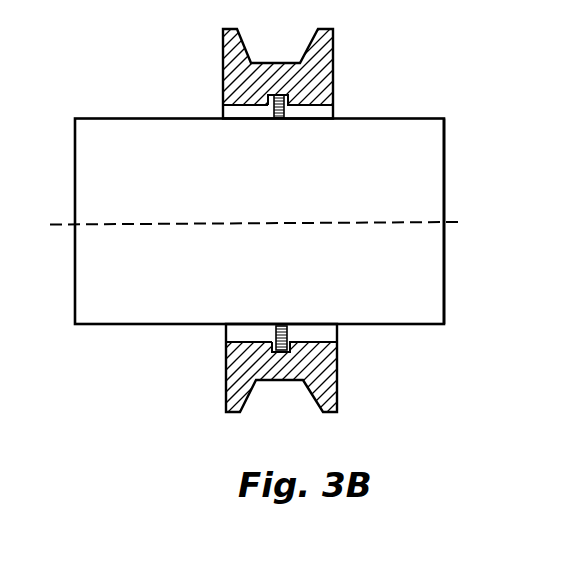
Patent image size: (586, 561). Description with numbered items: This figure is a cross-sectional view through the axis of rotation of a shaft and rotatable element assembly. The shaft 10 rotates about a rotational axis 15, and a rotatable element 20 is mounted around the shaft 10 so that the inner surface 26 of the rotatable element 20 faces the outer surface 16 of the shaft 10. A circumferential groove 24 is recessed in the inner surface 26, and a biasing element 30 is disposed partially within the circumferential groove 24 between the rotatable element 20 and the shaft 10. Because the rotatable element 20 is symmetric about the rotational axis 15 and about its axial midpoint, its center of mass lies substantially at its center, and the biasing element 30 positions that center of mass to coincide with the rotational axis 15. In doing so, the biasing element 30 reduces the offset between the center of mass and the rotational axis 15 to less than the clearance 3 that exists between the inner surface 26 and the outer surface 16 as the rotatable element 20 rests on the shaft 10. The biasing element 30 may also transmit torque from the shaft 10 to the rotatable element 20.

The shaft 10 is at (128, 150).
The rotational axis 15 is at (32, 227).
The outer surface 16 is at (428, 117).
The rotatable element 20 is at (327, 50).
The circumferential groove 24 is at (288, 92).
The inner surface 26 is at (322, 104).
The biasing element 30 is at (312, 100).
The clearance 3 is at (238, 330).